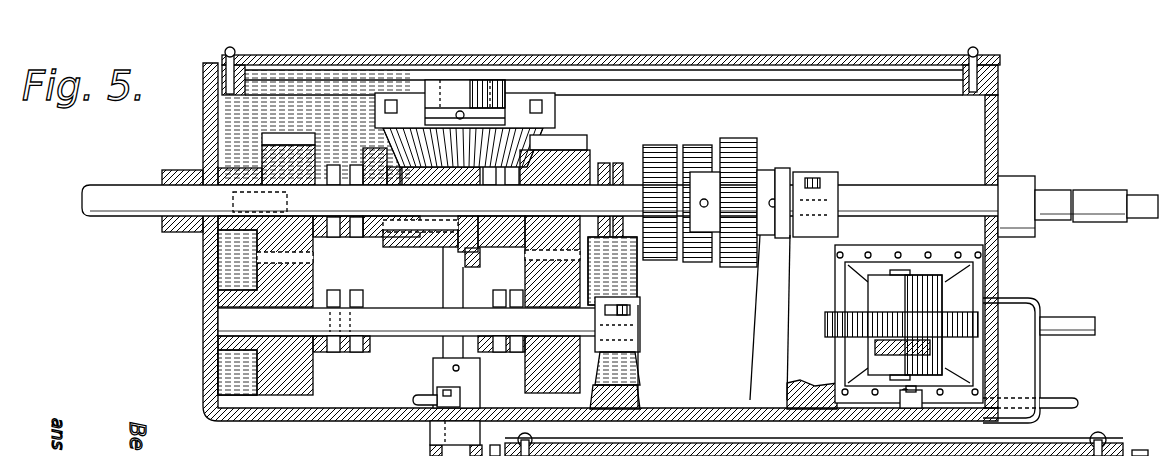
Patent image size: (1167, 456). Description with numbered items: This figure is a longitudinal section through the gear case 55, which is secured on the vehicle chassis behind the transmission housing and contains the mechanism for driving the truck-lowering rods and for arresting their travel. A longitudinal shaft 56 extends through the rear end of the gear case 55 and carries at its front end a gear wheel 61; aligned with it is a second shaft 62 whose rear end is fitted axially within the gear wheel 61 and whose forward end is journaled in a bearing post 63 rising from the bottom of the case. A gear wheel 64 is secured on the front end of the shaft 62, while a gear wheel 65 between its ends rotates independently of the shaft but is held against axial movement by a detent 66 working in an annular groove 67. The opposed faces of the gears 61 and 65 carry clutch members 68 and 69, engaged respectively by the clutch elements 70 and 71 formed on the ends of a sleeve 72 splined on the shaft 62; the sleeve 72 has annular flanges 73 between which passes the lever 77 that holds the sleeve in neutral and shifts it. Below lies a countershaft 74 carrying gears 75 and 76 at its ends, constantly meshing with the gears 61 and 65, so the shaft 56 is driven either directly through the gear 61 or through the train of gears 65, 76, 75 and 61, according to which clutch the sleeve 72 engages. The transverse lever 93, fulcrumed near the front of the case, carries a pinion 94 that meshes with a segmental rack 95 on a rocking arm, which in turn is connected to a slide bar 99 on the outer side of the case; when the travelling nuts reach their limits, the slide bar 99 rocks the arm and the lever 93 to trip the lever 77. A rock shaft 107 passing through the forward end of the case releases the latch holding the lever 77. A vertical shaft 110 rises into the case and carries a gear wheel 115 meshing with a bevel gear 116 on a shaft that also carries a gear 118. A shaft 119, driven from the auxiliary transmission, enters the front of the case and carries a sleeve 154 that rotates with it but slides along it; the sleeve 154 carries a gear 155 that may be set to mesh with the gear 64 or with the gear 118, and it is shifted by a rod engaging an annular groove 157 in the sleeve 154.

The gear case 55 is at (238, 423).
The longitudinal shaft 56 is at (140, 208).
The gear wheel 61 is at (215, 150).
The second shaft 62 is at (541, 200).
The bearing post 63 is at (840, 247).
The gear wheel 64 is at (748, 140).
The gear wheel 65 is at (588, 148).
The detent 66 is at (607, 167).
The annular groove 67 is at (600, 238).
The clutch member 68 is at (337, 162).
The clutch member 69 is at (527, 173).
The clutch element 70 is at (355, 240).
The clutch element 71 is at (503, 246).
The sleeve 72 is at (395, 160).
The annular flanges 73 is at (372, 250).
The countershaft 74 is at (409, 322).
The gear 75 is at (290, 365).
The gear 76 is at (535, 371).
The lever 77 is at (410, 240).
The transverse lever 93 is at (990, 365).
The pinion 94 is at (880, 335).
The segmental rack 95 is at (843, 303).
The slide bar 99 is at (1063, 310).
The rock shaft 107 is at (713, 397).
The vertical shaft 110 is at (450, 345).
The gear wheel 115 is at (412, 128).
The bevel gear 116 is at (525, 250).
The gear 118 is at (660, 250).
The shaft 119 is at (945, 190).
The sleeve 154 is at (783, 172).
The gear 155 is at (700, 255).
The annular groove 157 is at (782, 165).